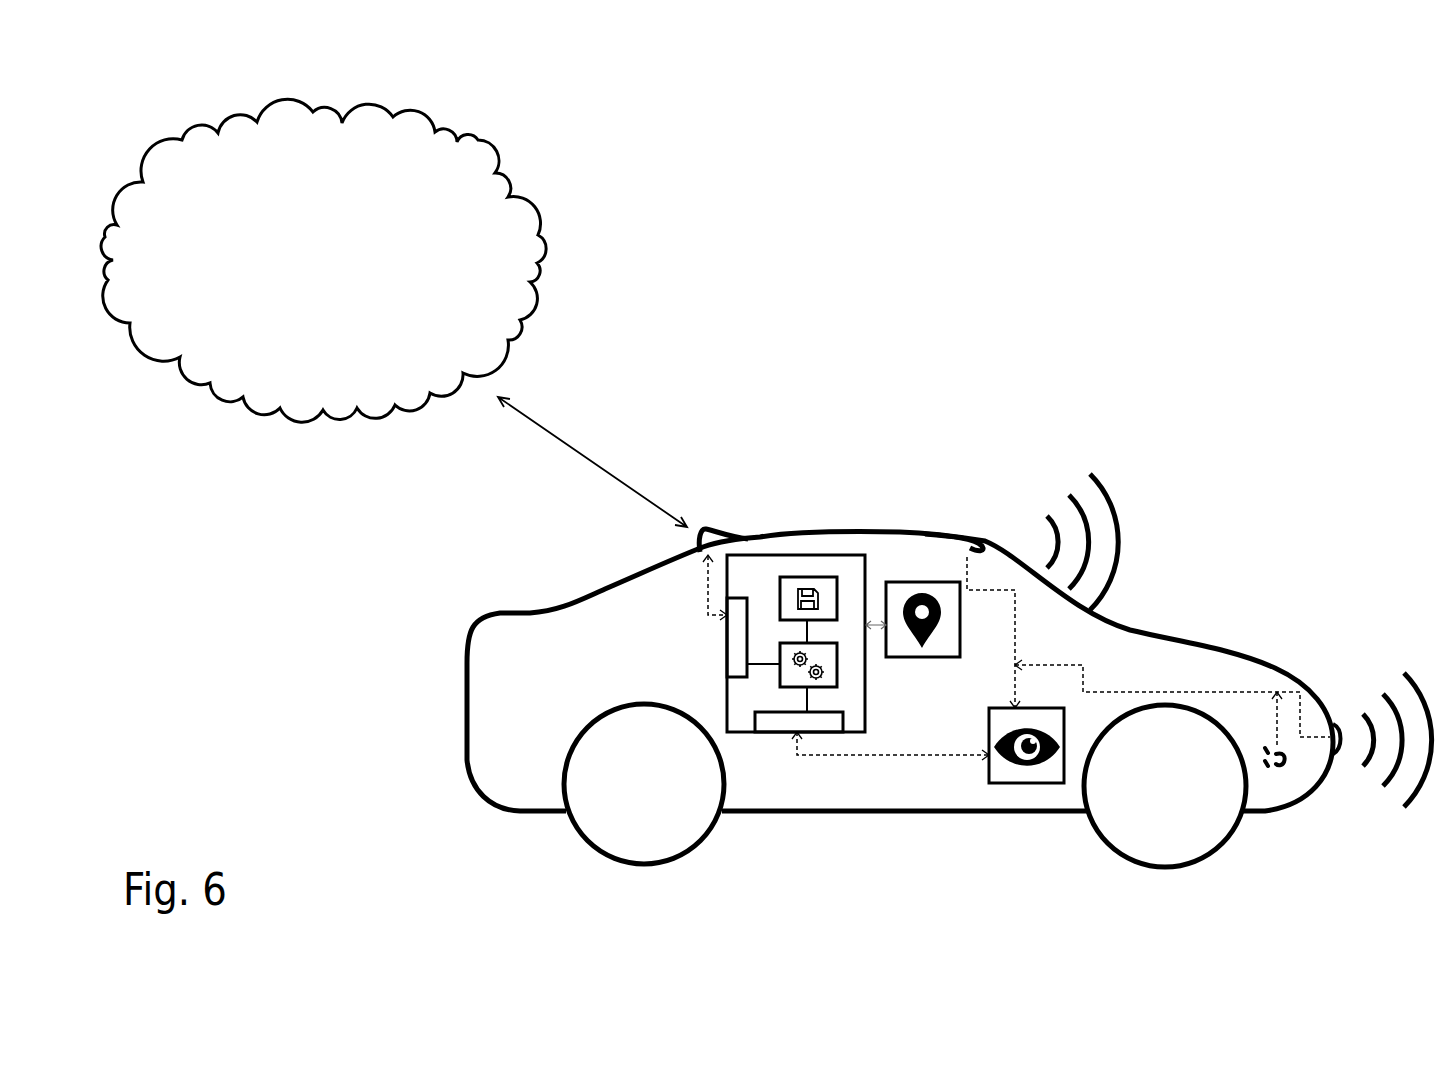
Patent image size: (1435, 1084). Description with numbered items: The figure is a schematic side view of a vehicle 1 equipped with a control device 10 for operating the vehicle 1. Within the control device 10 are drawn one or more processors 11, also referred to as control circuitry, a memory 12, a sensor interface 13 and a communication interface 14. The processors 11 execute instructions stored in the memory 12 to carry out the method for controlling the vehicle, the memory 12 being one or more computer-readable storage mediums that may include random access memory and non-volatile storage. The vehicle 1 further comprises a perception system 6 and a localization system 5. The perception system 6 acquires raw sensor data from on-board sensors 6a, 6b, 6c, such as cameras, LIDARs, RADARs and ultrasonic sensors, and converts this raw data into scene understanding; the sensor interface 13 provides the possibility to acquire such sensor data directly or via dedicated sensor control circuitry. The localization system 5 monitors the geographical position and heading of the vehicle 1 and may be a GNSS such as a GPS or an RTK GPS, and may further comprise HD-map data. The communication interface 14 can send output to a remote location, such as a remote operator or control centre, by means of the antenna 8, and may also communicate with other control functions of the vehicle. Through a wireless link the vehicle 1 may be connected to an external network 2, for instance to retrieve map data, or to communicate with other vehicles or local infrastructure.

The vehicle 1 is at (488, 806).
The external network 2 is at (478, 140).
The localization system 5 is at (907, 582).
The perception system 6 is at (1043, 790).
The sensor 6a is at (1280, 767).
The sensor 6b is at (1333, 722).
The sensor 6c is at (975, 540).
The antenna 8 is at (713, 530).
The control device 10 is at (787, 555).
The processor 11 is at (837, 667).
The memory 12 is at (807, 577).
The sensor interface 13 is at (780, 723).
The communication interface 14 is at (733, 650).